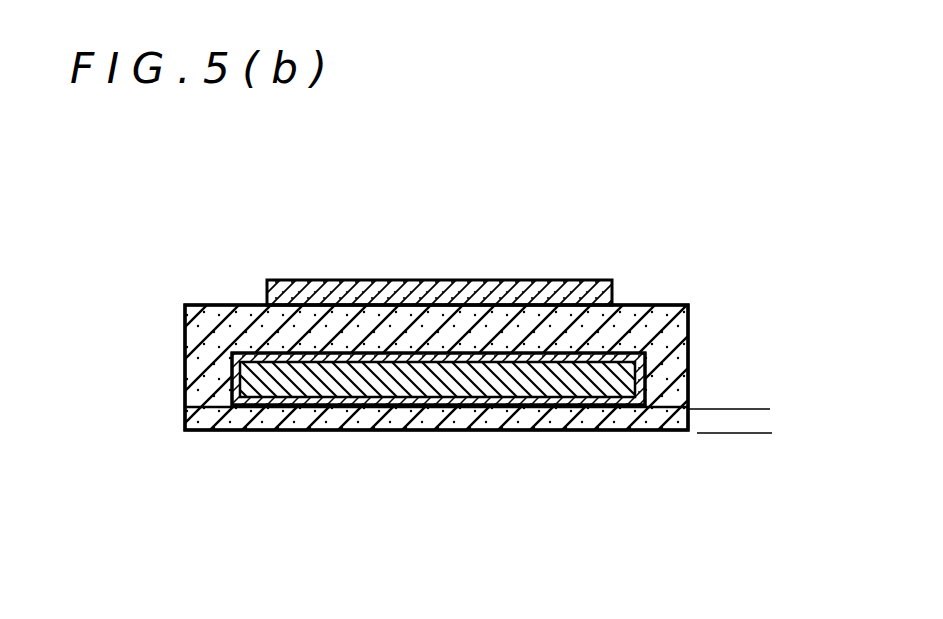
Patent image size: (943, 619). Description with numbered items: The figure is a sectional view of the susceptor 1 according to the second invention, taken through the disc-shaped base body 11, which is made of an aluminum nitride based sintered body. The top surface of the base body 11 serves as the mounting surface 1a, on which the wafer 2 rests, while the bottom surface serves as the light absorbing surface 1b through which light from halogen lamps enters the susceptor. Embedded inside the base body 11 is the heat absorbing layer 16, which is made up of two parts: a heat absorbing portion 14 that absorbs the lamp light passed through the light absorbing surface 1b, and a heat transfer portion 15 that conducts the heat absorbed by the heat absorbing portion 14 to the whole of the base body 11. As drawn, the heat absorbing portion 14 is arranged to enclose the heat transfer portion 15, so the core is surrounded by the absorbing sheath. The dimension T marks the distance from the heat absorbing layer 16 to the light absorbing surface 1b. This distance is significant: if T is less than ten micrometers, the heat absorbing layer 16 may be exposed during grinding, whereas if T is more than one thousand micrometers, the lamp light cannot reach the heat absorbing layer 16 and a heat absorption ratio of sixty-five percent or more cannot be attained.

The susceptor 1 is at (640, 305).
The mounting surface 1a is at (207, 305).
The light absorbing surface 1b is at (233, 430).
The wafer 2 is at (408, 280).
The base body 11 is at (195, 374).
The heat absorbing portion 14 is at (548, 392).
The heat transfer portion 15 is at (448, 388).
The heat absorbing layer 16 is at (575, 525).
The distance from the heat absorbing layer to the light absorbing surface T is at (750, 382).